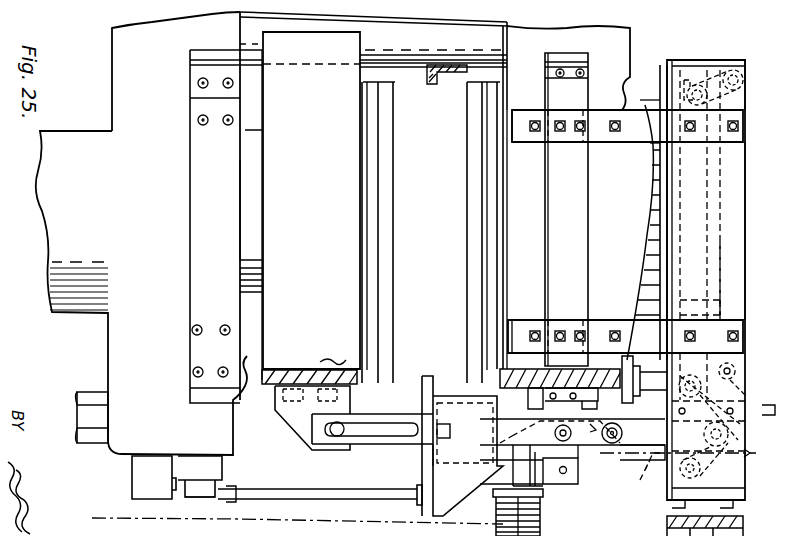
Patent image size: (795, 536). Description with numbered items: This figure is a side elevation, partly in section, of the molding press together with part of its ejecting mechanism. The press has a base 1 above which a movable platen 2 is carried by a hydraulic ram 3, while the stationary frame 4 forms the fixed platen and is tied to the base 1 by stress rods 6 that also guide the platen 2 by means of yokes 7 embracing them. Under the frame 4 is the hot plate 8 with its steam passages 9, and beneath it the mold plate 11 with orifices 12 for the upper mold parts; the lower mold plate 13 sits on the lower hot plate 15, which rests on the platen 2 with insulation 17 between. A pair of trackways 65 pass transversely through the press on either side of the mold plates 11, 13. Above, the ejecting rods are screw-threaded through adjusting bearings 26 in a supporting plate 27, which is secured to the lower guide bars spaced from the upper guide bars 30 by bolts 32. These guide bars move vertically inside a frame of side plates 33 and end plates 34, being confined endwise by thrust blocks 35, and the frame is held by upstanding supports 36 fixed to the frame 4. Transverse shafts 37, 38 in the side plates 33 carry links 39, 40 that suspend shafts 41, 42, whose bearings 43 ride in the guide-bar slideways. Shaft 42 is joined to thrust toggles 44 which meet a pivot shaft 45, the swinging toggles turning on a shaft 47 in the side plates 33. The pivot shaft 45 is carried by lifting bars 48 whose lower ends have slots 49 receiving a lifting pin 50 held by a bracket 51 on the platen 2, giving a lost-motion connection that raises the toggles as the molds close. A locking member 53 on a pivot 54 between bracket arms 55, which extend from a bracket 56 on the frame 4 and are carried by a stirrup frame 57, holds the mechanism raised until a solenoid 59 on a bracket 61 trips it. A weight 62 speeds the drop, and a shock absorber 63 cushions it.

The base 1 is at (117, 386).
The movable platen 2 is at (311, 208).
The hydraulic ram 3 is at (246, 248).
The stationary frame 4 is at (582, 209).
The stress rods 6 is at (403, 53).
The yokes 7 is at (380, 53).
The hot plate 8 is at (492, 212).
The steam passages 9 is at (312, 494).
The mold plate 11 is at (474, 282).
The orifices 12 is at (660, 70).
The lower mold plate 13 is at (392, 210).
The lower hot plate 15 is at (377, 242).
The insulation 17 is at (360, 298).
The adjusting bearing 26 is at (96, 514).
The supporting plate 27 is at (749, 87).
The upper guide bars 30 is at (720, 245).
The bolts 32 is at (715, 526).
The side plates 33 is at (750, 206).
The end plates 34 is at (625, 231).
The thrust blocks 35 is at (640, 225).
The upstanding supports 36 is at (630, 322).
The shaft 37 is at (733, 62).
The shaft 38 is at (748, 390).
The links 39 is at (711, 62).
The links 40 is at (745, 410).
The shaft 41 is at (687, 62).
The shaft 42 is at (636, 379).
The bearings 43 is at (652, 88).
The thrust toggles 44 is at (655, 420).
The pivot shaft 45 is at (748, 490).
The shaft 47 is at (645, 472).
The lifting bars 48 is at (473, 433).
The slots 49 is at (400, 428).
The lifting pin 50 is at (337, 436).
The bracket 51 is at (292, 414).
The locking member 53 is at (590, 448).
The pivot 54 is at (560, 470).
The bracket arms 55 is at (550, 296).
The bracket 56 is at (520, 406).
The stirrup frame 57 is at (538, 486).
The solenoid 59 is at (200, 497).
The bracket 61 is at (500, 490).
The weight 62 is at (461, 226).
The shock absorber 63 is at (470, 398).
The trackways 65 is at (453, 62).